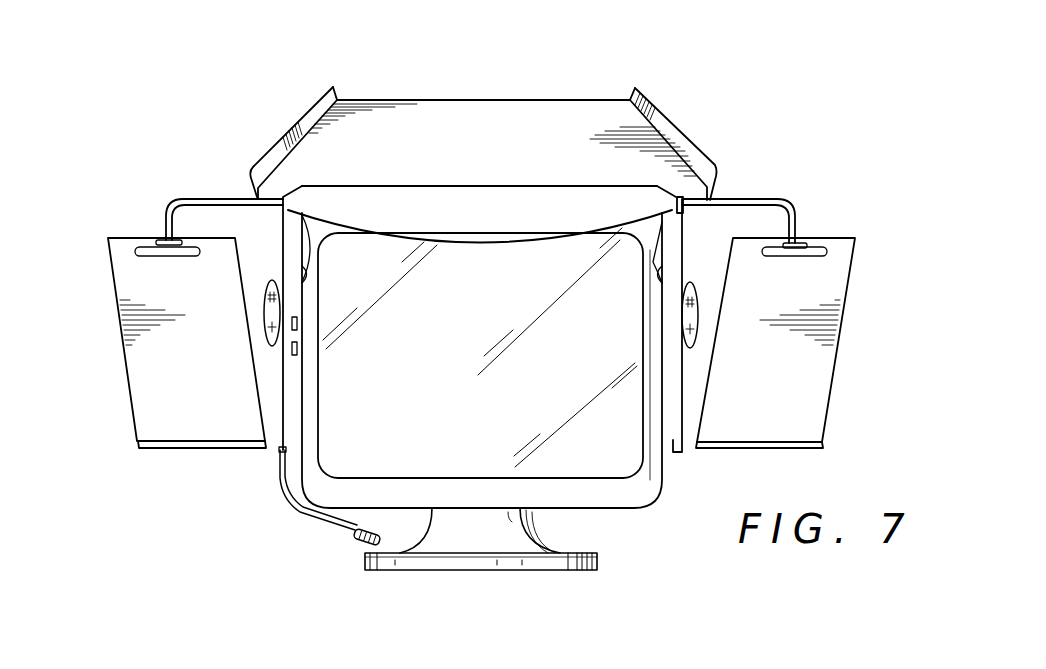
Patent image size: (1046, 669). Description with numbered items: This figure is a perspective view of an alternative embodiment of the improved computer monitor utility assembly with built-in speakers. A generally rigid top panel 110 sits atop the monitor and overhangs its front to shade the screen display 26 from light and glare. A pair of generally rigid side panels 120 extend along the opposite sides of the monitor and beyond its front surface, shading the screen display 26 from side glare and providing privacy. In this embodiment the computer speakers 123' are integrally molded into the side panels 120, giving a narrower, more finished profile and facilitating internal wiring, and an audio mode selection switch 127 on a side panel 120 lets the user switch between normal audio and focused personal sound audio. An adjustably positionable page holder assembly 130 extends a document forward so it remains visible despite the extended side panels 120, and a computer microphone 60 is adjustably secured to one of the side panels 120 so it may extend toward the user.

The top panel 110 is at (495, 115).
The side panels 120 is at (285, 232).
The computer speakers 123' is at (482, 343).
The audio mode selection switch 127 is at (285, 387).
The page holder assembly 130 is at (157, 216).
The computer microphone 60 is at (318, 517).
The screen display 26 is at (612, 495).